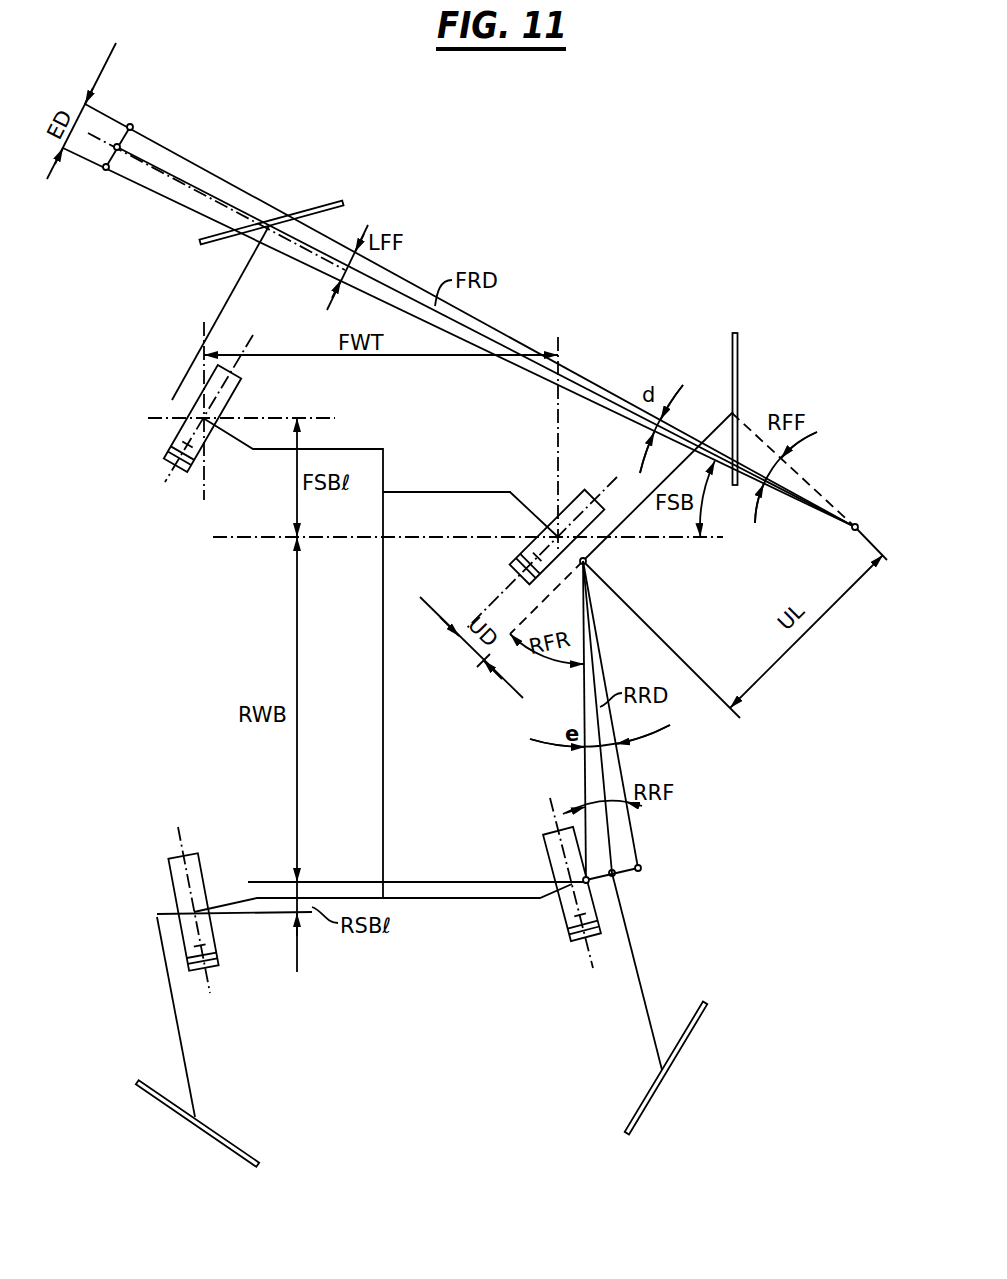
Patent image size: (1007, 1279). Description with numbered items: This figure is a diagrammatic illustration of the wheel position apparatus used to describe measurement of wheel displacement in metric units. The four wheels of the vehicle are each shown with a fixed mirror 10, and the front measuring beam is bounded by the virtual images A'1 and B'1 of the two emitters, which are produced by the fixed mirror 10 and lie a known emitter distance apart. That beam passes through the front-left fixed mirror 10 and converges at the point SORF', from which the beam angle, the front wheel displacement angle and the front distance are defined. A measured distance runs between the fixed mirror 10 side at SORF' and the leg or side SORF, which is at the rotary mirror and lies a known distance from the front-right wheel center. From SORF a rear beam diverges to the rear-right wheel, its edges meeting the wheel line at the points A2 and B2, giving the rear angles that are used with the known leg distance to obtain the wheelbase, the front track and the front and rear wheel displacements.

The fixed mirror 10 is at (324, 180).
The virtual image of emitter A1 A'1 is at (152, 110).
The virtual image of emitter B1 B'1 is at (87, 184).
The leg or side SORF is at (627, 566).
The projected leg point SORF' is at (849, 500).
The rear beam edge point A2 is at (590, 883).
The rear beam edge point B2 is at (641, 868).